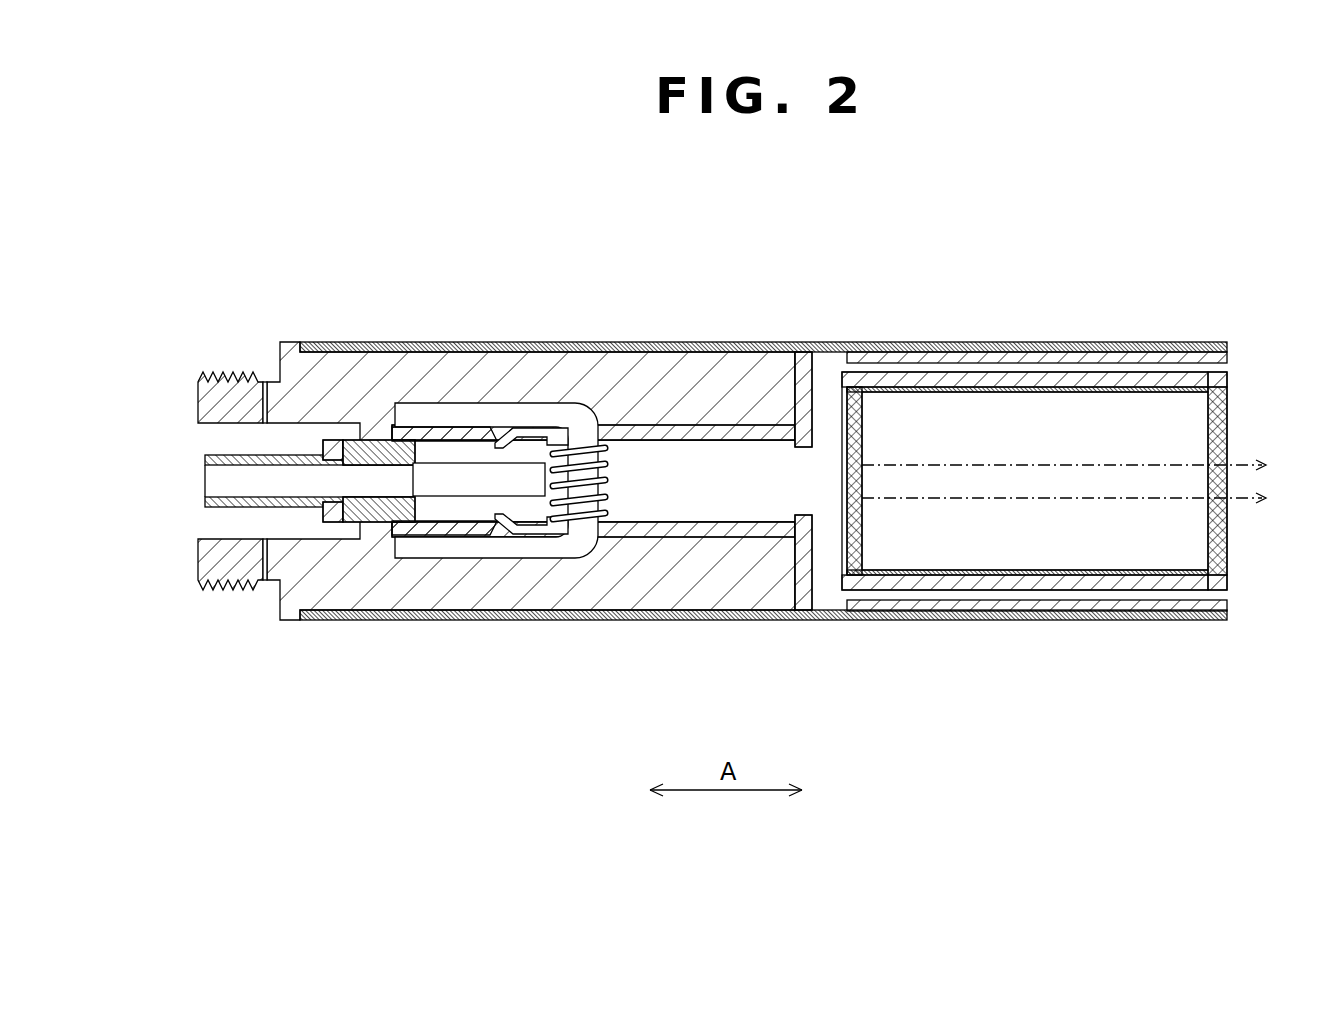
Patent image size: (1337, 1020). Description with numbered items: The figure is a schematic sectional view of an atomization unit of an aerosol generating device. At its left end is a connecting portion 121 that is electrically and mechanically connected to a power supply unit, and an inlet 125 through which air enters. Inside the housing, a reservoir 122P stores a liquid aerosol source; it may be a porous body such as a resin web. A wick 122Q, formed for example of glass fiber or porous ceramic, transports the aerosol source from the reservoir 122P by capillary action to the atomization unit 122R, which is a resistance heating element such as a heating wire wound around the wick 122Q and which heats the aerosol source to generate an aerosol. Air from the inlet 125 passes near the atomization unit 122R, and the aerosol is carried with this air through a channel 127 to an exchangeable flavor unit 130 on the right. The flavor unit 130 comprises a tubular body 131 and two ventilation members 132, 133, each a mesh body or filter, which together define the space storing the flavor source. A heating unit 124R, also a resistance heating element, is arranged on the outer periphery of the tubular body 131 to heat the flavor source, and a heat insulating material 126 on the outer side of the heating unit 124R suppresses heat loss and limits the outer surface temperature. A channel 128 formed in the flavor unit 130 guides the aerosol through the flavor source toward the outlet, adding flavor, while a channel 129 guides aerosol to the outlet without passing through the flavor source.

The connecting portion 121 is at (230, 558).
The inlet 125 is at (262, 378).
The reservoir 122P is at (660, 570).
The wick 122Q is at (530, 548).
The atomization unit 122R is at (608, 468).
The heat insulating material 126 is at (925, 343).
The channel 127 is at (723, 512).
The heating unit 124R is at (1062, 375).
The tubular body 131 is at (1150, 388).
The ventilation member 132 is at (1228, 527).
The ventilation member 133 is at (862, 530).
The channel 128 is at (953, 520).
The channel 129 is at (1063, 600).
The flavor unit 130 is at (1240, 438).